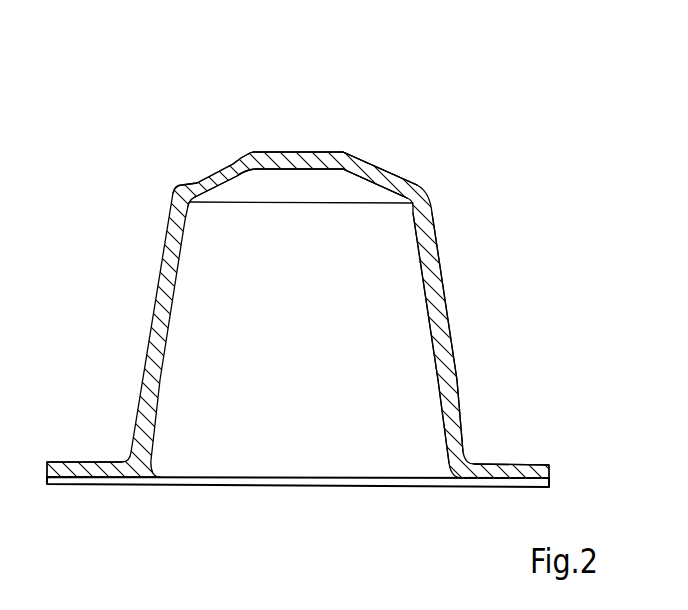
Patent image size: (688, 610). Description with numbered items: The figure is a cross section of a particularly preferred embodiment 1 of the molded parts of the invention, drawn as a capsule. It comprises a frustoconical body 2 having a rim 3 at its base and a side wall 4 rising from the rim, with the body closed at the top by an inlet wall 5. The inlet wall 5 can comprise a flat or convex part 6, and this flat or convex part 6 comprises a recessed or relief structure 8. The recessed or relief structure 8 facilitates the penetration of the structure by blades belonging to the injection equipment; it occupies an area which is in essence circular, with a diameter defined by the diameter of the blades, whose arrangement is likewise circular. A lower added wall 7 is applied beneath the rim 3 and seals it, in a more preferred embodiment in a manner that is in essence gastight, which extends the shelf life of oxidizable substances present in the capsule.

The embodiment of the molded parts 1 is at (512, 301).
The frustoconical body 2 is at (437, 258).
The rim 3 is at (520, 462).
The side wall 4 is at (448, 385).
The inlet wall 5 is at (261, 111).
The flat or convex part 6 is at (353, 150).
The lower added wall 7 is at (398, 483).
The recessed or relief structure 8 is at (215, 172).